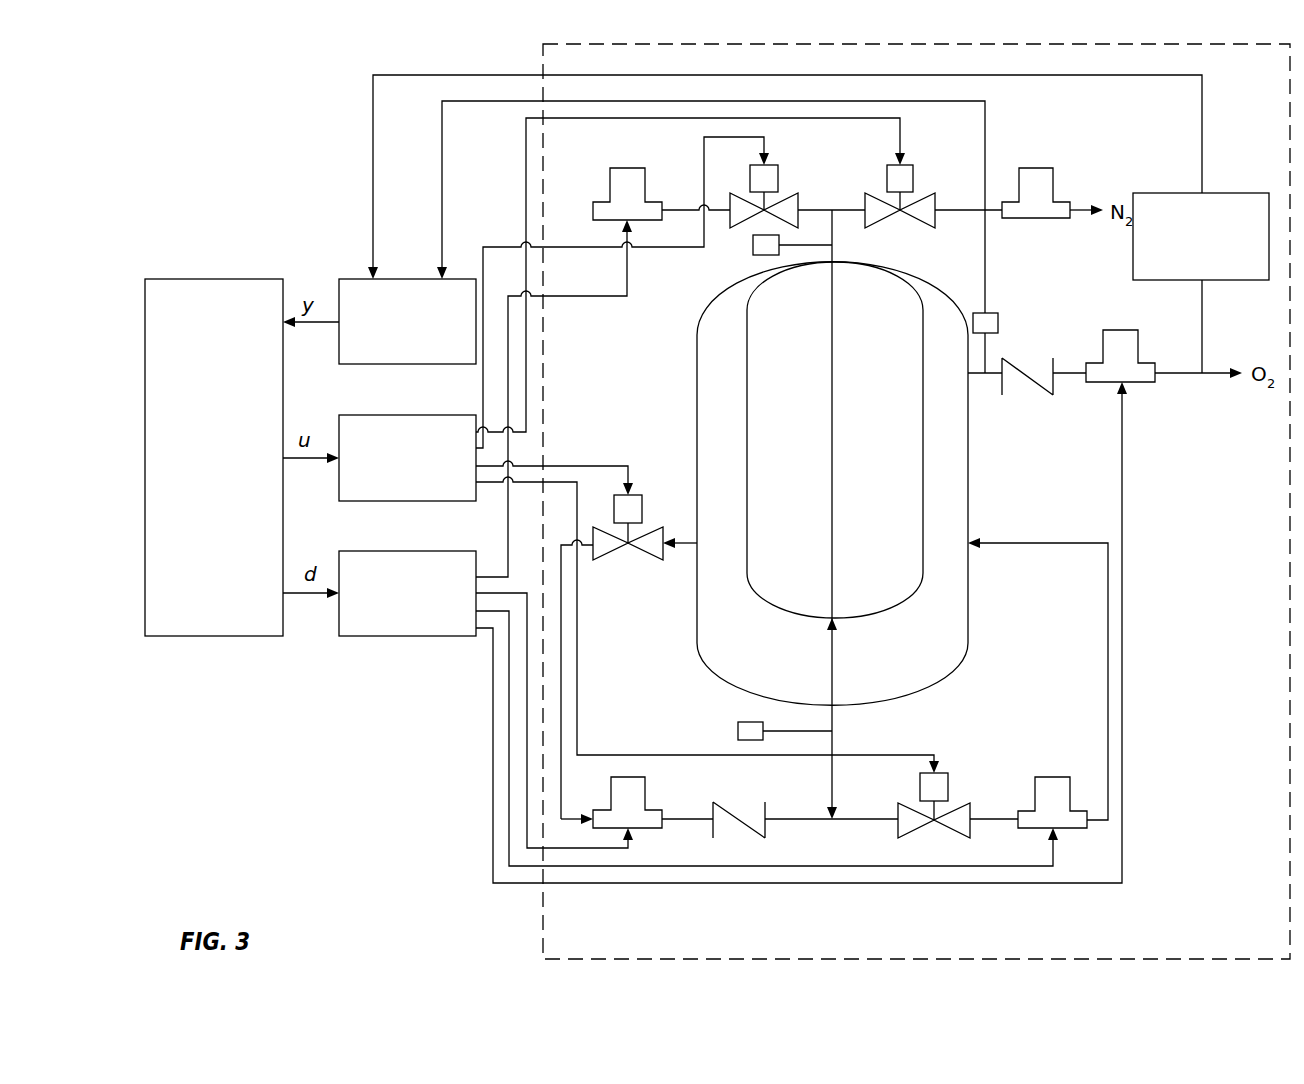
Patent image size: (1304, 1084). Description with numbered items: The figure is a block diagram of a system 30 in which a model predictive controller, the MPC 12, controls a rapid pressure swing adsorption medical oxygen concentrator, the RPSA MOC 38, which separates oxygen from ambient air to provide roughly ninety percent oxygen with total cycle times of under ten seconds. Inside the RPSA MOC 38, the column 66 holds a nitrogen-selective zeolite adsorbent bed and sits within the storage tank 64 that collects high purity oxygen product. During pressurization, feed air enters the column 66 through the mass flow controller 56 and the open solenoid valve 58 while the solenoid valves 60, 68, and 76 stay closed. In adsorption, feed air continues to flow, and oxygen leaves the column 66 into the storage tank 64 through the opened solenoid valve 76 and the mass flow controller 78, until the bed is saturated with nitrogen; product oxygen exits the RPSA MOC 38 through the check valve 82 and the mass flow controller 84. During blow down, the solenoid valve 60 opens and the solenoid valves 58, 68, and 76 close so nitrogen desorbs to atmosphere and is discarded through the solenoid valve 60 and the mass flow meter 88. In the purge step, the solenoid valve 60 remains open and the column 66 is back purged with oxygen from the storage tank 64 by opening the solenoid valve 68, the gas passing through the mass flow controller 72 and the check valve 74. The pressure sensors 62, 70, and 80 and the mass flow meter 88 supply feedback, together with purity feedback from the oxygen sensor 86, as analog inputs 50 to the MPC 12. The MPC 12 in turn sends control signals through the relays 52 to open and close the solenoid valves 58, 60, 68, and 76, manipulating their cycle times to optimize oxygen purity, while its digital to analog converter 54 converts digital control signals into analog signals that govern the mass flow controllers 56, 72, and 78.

The system 30 is at (252, 157).
The MPC 12 is at (226, 483).
The RPSA MOC 38 is at (1235, 935).
The analog inputs 50 is at (419, 360).
The relays 52 is at (419, 481).
The digital to analog converter (DAC) 54 is at (419, 618).
The mass flow controller 56 is at (647, 190).
The solenoid valve 58 is at (780, 180).
The solenoid valve 60 is at (915, 180).
The pressure sensor 62 is at (753, 250).
The storage tank 64 is at (697, 432).
The column 66 is at (805, 507).
The solenoid valve 68 is at (643, 510).
The pressure sensor 70 is at (738, 737).
The mass flow controller 72 is at (645, 805).
The check valve 74 is at (738, 819).
The solenoid valve 76 is at (948, 786).
The mass flow controller 78 is at (1066, 777).
The pressure sensor 80 is at (1000, 325).
The check valve 82 is at (1025, 375).
The mass flow controller 84 is at (1140, 350).
The oxygen sensor 86 is at (1213, 274).
The mass flow meter 88 is at (1053, 187).